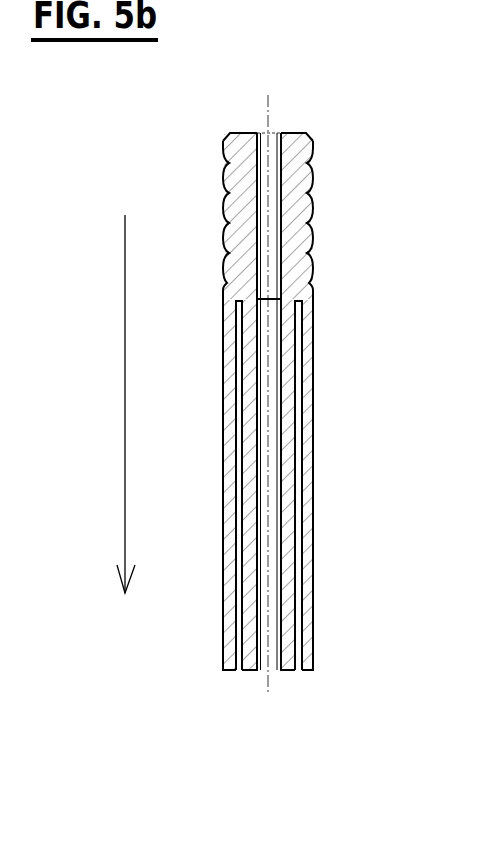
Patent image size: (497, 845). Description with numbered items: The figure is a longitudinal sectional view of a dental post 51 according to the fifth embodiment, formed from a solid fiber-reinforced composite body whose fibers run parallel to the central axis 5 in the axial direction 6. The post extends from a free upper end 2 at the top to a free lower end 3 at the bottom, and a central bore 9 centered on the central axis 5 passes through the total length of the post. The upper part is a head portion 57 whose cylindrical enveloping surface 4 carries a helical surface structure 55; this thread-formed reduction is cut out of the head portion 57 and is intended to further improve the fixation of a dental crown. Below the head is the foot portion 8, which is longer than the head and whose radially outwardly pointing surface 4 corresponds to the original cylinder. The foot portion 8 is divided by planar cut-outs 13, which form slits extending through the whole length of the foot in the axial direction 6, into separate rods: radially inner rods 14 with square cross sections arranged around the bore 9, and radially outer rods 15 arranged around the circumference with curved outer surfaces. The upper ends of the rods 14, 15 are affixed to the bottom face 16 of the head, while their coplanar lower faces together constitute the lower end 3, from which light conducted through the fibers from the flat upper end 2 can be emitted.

The dental post 51 is at (341, 107).
The free upper end 2 is at (244, 128).
The central bore 9 is at (258, 113).
The central axis 5 is at (267, 113).
The head portion 57 is at (310, 187).
The helical surface structure 55 is at (307, 233).
The bottom face 16 is at (300, 302).
The enveloping surface 4 is at (223, 414).
The foot portion 8 is at (232, 458).
The radially outer rods 15 is at (238, 536).
The radially inner rods 14 is at (250, 645).
The planar cut-outs 13 is at (238, 684).
The free lower end 3 is at (301, 735).
The axial direction 6 is at (125, 415).